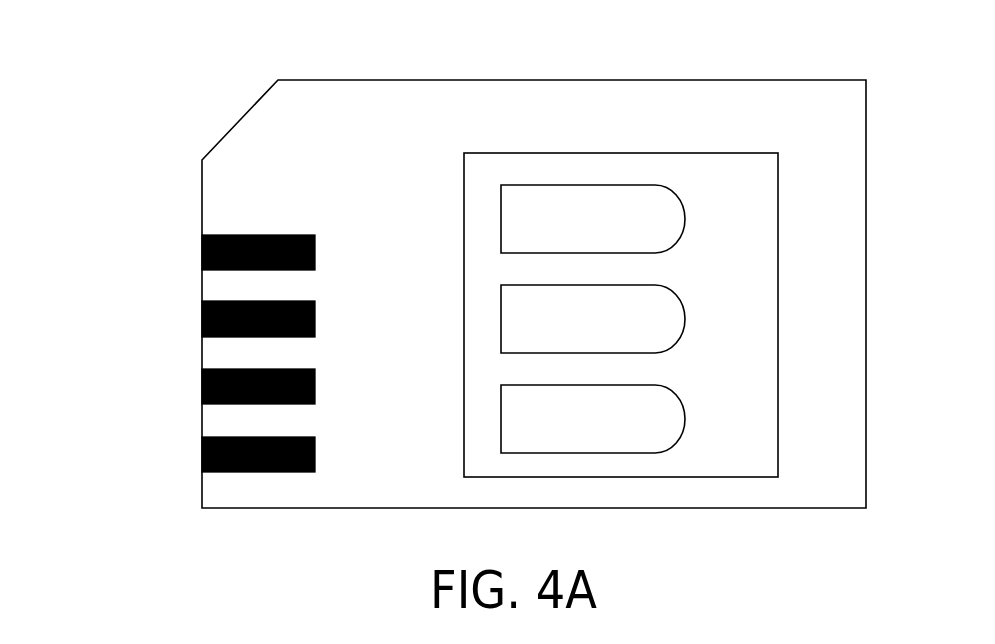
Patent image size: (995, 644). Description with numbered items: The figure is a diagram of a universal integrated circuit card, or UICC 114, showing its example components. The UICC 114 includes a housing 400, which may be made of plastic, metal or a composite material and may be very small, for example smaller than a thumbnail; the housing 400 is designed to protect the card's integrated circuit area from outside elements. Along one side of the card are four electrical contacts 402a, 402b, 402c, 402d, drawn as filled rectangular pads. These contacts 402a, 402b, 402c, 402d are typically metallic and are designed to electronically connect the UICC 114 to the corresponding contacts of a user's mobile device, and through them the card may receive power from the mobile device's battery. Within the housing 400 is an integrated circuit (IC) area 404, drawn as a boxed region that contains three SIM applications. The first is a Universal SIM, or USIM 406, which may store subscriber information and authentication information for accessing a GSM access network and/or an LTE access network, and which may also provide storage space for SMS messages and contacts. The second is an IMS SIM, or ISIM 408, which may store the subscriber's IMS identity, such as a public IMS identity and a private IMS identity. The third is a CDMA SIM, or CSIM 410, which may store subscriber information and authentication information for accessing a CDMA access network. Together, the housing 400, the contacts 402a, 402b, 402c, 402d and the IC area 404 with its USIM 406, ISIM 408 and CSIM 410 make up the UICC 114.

The universal integrated circuit card (UICC) 114 is at (200, 80).
The housing 400 is at (374, 80).
The contact 402a is at (315, 252).
The contact 402b is at (315, 319).
The contact 402c is at (315, 386).
The contact 402d is at (315, 454).
The integrated circuit (IC) area 404 is at (616, 153).
The Universal SIM (USIM) 406 is at (683, 220).
The IMS SIM (ISIM) 408 is at (683, 320).
The CDMA SIM (CSIM) 410 is at (683, 420).